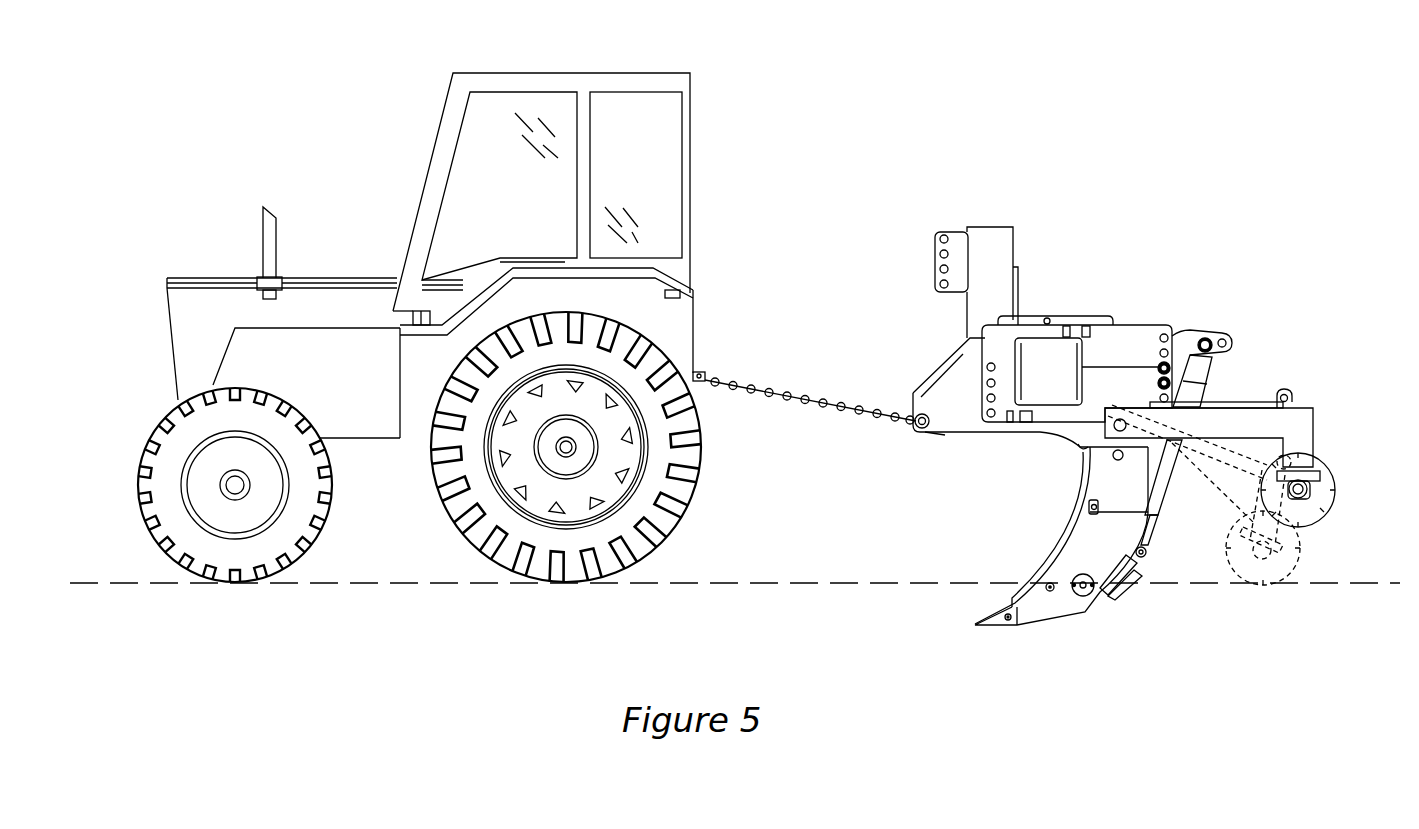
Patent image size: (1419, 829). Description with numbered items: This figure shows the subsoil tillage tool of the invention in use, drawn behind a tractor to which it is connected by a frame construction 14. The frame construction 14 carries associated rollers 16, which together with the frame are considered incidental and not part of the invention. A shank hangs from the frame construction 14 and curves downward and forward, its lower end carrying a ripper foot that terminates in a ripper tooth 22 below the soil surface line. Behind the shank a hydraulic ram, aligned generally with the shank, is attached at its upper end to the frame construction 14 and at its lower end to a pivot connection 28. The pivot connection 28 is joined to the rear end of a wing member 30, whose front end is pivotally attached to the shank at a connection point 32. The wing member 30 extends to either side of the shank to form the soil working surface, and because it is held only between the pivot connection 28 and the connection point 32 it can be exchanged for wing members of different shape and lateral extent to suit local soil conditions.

The frame construction 14 is at (1078, 300).
The rollers 16 is at (1332, 513).
The ripper tooth 22 is at (985, 629).
The pivot connection 28 is at (1150, 556).
The wing member 30 is at (1132, 583).
The connection point 32 is at (1086, 592).